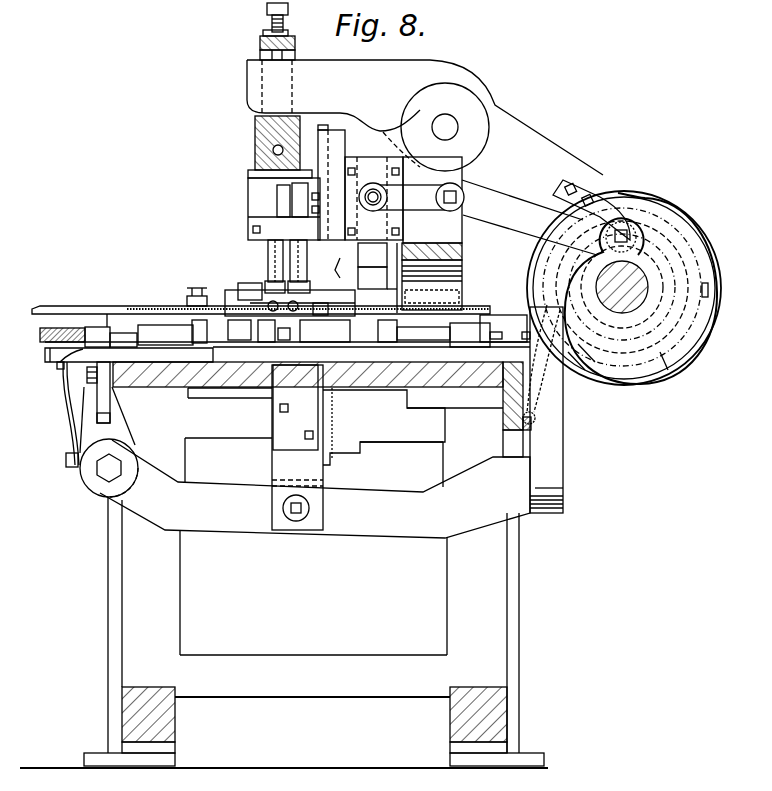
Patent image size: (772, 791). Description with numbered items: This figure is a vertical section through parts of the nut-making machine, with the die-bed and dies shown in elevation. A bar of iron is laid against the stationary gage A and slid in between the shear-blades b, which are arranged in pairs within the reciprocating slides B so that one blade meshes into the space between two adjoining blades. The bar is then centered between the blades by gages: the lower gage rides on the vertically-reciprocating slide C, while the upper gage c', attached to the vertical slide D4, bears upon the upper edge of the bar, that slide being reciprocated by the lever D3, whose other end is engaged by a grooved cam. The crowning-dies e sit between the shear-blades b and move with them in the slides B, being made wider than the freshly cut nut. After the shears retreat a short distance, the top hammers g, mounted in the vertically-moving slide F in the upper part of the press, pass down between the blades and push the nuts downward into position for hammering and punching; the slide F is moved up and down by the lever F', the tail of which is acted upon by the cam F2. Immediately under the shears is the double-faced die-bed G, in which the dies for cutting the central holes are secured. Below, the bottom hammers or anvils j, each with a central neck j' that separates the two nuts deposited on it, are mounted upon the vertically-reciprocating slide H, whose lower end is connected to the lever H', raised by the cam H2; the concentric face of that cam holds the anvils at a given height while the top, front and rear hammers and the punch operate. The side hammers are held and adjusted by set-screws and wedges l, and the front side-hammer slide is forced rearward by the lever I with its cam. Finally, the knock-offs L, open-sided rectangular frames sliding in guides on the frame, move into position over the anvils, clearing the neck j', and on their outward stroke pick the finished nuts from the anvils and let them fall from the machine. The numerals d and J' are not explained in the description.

The stationary gage A is at (261, 297).
The reciprocating slide B is at (207, 285).
The vertically-reciprocating slide C is at (372, 278).
The lever D3 is at (478, 217).
The vertical slide D4 is at (372, 255).
The vertically-moving slide F is at (271, 205).
The lever F' is at (438, 150).
The cam F2 is at (663, 213).
The double-faced die-bed G is at (239, 330).
The vertically-reciprocating slide H is at (302, 447).
The lever H' is at (305, 488).
The cam H2 is at (677, 333).
The lever I is at (40, 335).
The bracket J' is at (505, 328).
The knock-off L is at (318, 413).
The shear-blade b is at (290, 293).
The gage c' is at (334, 273).
The block d is at (284, 335).
The crowning-die e is at (285, 300).
The top hammer g is at (268, 257).
The bottom hammer or anvil j is at (284, 391).
The central neck j' is at (305, 403).
The wedge l is at (292, 336).